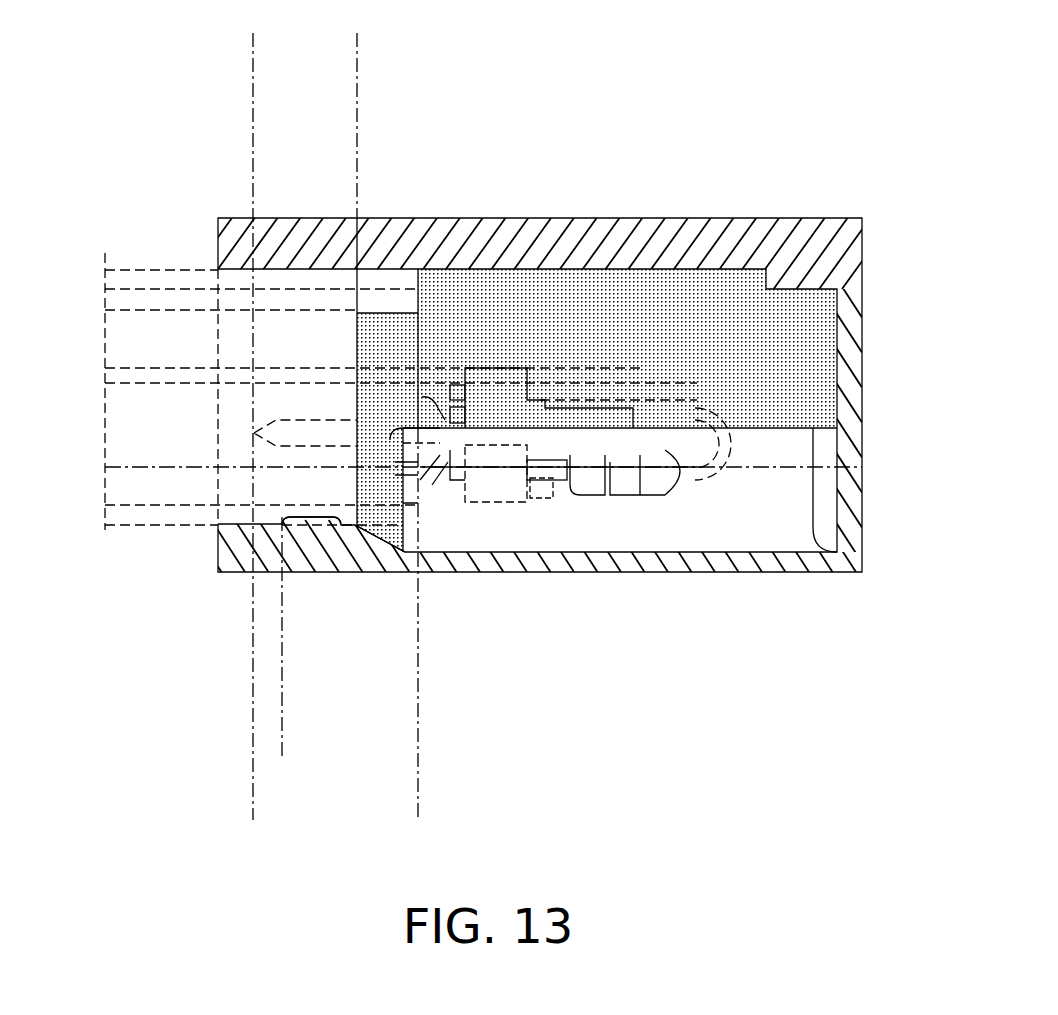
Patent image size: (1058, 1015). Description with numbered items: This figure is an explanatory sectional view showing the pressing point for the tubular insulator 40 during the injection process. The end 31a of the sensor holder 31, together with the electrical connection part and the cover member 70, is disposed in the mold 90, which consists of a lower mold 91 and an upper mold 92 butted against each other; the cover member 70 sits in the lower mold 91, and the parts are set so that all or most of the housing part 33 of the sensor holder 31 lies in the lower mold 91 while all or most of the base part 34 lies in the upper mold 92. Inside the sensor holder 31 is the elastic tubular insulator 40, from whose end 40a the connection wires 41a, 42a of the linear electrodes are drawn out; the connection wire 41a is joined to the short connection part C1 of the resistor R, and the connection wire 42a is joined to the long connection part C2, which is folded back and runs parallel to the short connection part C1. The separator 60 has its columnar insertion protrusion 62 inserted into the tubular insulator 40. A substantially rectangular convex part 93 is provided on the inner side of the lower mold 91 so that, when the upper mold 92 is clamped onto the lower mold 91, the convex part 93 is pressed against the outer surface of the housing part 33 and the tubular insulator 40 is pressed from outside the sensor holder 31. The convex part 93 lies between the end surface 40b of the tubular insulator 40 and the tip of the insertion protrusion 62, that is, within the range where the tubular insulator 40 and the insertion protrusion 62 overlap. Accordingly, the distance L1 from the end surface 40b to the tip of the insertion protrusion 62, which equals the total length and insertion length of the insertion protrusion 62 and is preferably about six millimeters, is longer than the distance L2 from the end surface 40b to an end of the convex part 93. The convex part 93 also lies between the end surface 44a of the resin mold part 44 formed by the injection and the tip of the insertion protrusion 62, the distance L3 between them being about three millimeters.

The sensor holder 31 is at (140, 248).
The end of the sensor holder 31a is at (218, 218).
The housing part 33 is at (168, 527).
The base part 34 is at (183, 268).
The tubular insulator 40 is at (133, 503).
The end of the tubular insulator 40a is at (443, 470).
The end surface of the tubular insulator 40b is at (423, 488).
The connection wire 41a is at (433, 470).
The connection wire 42a is at (452, 400).
The mold part 44 is at (697, 292).
The end surface of the mold part 44a is at (343, 333).
The separator 60 is at (612, 405).
The insertion protrusion 62 is at (297, 447).
The cover member 70 is at (772, 540).
The mold 90 is at (773, 216).
The lower mold 91 is at (862, 528).
The upper mold 92 is at (863, 404).
The convex part 93 is at (317, 508).
The short connection part C1 is at (545, 484).
The long connection part C2 is at (733, 418).
The resistor R is at (645, 496).
The distance L1 is at (253, 798).
The distance L2 is at (418, 735).
The distance L3 is at (253, 58).